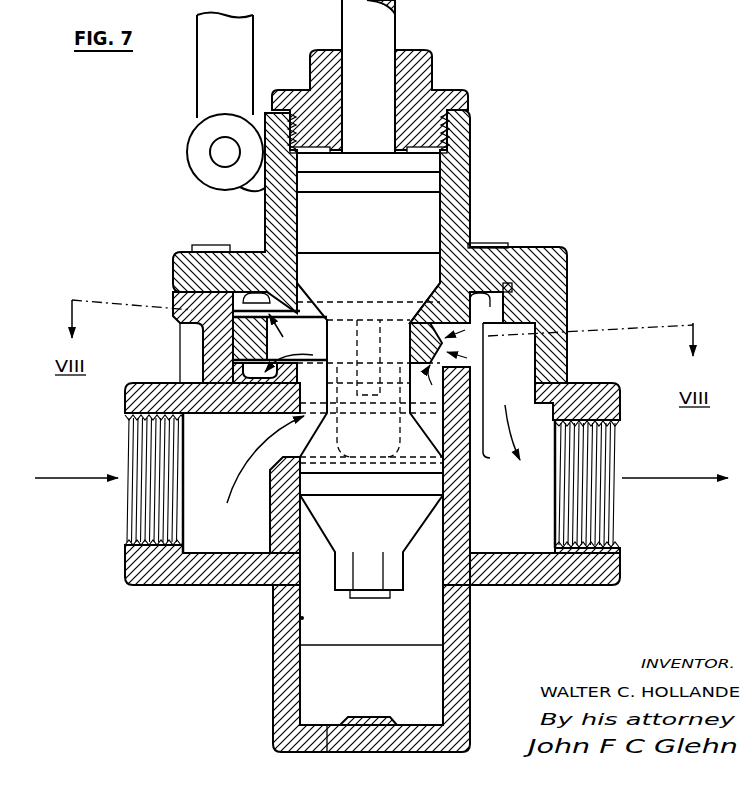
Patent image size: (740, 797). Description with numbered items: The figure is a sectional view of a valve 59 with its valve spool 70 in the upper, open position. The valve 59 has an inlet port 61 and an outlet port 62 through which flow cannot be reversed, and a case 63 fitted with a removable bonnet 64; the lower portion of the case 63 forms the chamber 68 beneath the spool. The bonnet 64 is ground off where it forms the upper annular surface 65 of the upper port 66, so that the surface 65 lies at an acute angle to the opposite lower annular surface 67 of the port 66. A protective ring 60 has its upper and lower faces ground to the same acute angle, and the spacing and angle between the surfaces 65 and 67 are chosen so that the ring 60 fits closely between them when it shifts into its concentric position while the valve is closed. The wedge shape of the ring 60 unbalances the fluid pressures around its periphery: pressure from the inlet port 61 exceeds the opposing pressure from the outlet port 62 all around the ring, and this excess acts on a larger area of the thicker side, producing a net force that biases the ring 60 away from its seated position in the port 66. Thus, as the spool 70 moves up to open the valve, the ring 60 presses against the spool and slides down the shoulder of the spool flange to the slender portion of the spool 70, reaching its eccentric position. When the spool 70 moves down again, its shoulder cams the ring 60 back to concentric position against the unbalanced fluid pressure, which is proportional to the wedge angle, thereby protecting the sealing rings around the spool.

The valve 59 is at (480, 163).
The protective ring 60 is at (243, 345).
The inlet port 61 is at (140, 514).
The outlet port 62 is at (603, 510).
The case 63 is at (462, 618).
The removable bonnet 64 is at (540, 248).
The upper annular surface 65 is at (486, 332).
The upper port 66 is at (457, 347).
The lower annular surface 67 is at (457, 355).
The lower bore chamber 68 is at (300, 618).
The valve spool 70 is at (410, 228).